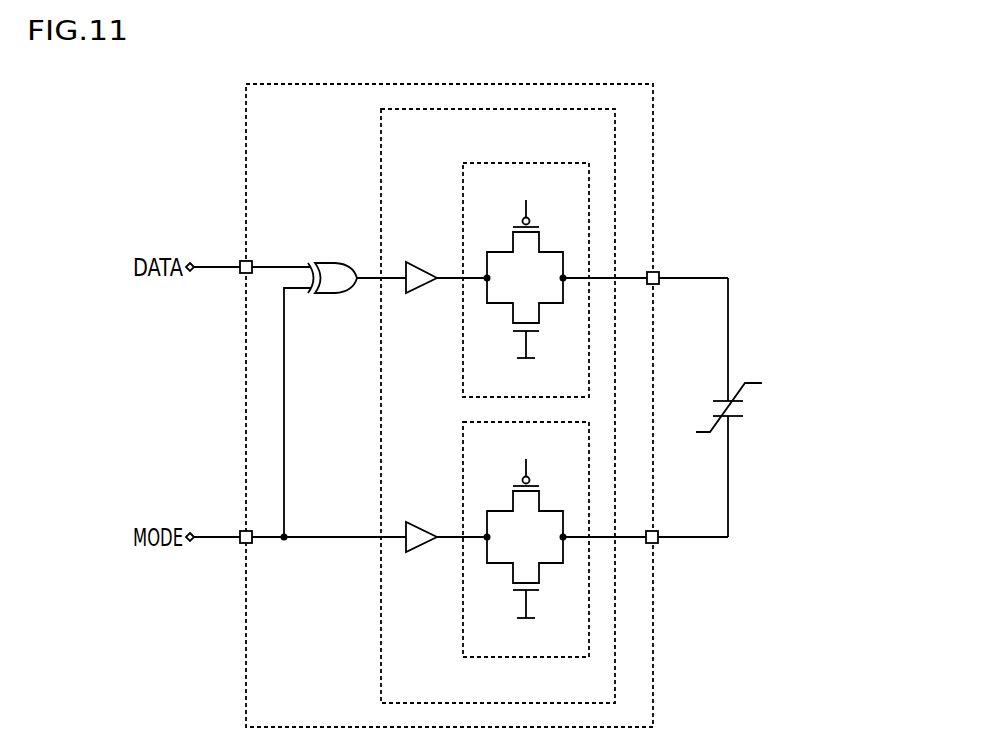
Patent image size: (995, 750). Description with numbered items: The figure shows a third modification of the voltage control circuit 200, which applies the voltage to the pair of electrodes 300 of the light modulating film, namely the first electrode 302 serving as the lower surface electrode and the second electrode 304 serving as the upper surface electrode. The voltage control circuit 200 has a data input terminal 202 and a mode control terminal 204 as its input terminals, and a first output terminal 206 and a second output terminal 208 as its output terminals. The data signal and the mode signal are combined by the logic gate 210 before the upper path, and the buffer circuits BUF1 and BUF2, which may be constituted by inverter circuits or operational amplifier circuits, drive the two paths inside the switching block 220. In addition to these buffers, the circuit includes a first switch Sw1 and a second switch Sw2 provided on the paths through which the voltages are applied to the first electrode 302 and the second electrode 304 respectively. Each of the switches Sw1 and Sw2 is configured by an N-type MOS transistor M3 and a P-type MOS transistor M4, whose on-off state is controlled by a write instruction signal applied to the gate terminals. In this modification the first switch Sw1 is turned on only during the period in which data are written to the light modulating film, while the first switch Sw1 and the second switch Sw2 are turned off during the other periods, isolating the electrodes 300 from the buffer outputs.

The voltage control circuit 200 is at (653, 163).
The data input terminal 202 is at (242, 273).
The mode control terminal 204 is at (242, 543).
The first output terminal 206 is at (654, 543).
The second output terminal 208 is at (655, 272).
The exclusive-OR gate 210 is at (338, 293).
The switch circuit block 220 is at (381, 652).
The pair of electrodes 300 is at (792, 417).
The first electrode 302 is at (748, 415).
The second electrode 304 is at (748, 399).
The first switch Sw1 is at (531, 557).
The second switch Sw2 is at (531, 264).
The buffer circuit BUF1 is at (423, 552).
The buffer circuit BUF2 is at (423, 293).
The N-type MOS transistor M3 is at (540, 354).
The P-type MOS transistor M4 is at (540, 208).